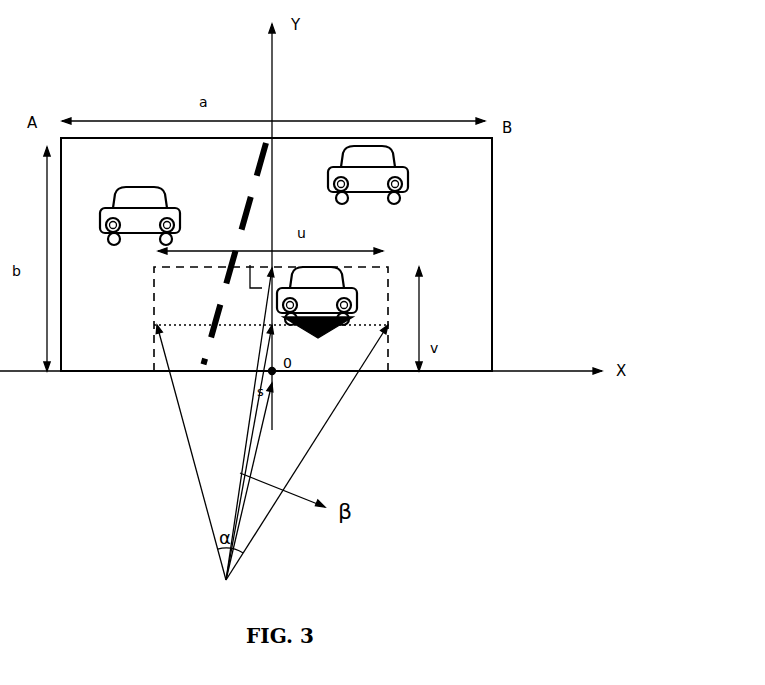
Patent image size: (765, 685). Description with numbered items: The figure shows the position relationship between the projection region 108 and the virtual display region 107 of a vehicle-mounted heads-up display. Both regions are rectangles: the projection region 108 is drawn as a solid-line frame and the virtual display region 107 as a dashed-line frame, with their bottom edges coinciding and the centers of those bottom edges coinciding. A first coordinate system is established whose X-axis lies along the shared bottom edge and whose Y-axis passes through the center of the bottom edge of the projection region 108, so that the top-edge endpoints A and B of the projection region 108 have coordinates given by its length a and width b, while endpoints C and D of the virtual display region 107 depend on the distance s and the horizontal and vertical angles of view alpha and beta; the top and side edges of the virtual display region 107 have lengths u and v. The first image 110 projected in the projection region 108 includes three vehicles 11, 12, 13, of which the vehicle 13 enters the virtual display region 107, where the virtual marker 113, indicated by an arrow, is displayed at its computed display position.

The vehicle 11 is at (140, 216).
The vehicle 12 is at (368, 175).
The vehicle 13 is at (317, 296).
The virtual display region 107 is at (388, 307).
The projection region 108 is at (492, 175).
The first image 110 is at (433, 236).
The virtual marker 113 is at (318, 332).